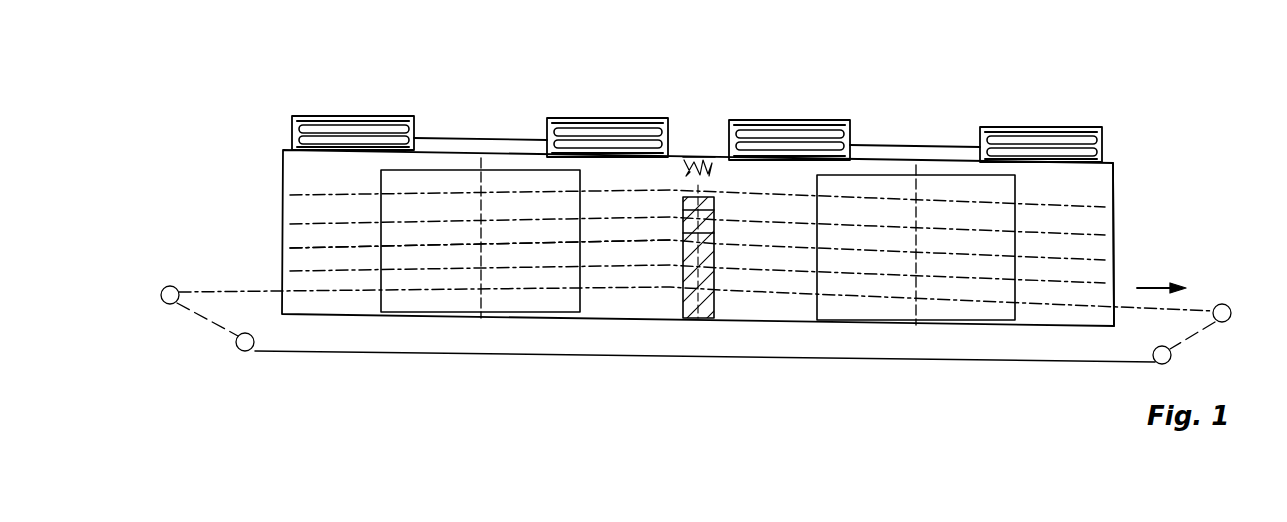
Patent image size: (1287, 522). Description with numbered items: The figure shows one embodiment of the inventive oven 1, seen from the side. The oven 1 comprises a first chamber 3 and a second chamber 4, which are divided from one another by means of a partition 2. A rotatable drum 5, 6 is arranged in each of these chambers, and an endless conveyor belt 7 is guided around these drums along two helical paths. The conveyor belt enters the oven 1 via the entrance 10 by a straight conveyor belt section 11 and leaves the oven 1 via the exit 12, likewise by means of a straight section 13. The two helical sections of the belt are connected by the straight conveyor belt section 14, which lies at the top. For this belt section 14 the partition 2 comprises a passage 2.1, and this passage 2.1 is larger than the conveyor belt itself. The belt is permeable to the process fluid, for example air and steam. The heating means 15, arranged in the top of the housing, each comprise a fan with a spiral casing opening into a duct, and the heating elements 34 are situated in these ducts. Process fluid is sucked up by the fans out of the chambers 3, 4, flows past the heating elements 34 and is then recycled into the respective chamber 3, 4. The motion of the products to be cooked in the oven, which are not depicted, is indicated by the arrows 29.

The oven 1 is at (1160, 152).
The partition 2 is at (696, 318).
The passage 2.1 is at (698, 160).
The first chamber 3 is at (290, 182).
The second chamber 4 is at (1114, 198).
The rotatable drum 5 is at (417, 181).
The rotatable drum 6 is at (878, 190).
The conveyor belt 7 is at (297, 248).
The entrance 10 is at (283, 278).
The straight conveyor belt section 11 is at (205, 291).
The exit 12 is at (1120, 282).
The straight section 13 is at (1185, 302).
The straight conveyor belt section 14 is at (770, 193).
The heating means 15 is at (369, 96).
The arrows 29 is at (1172, 284).
The heating elements 34 is at (331, 133).